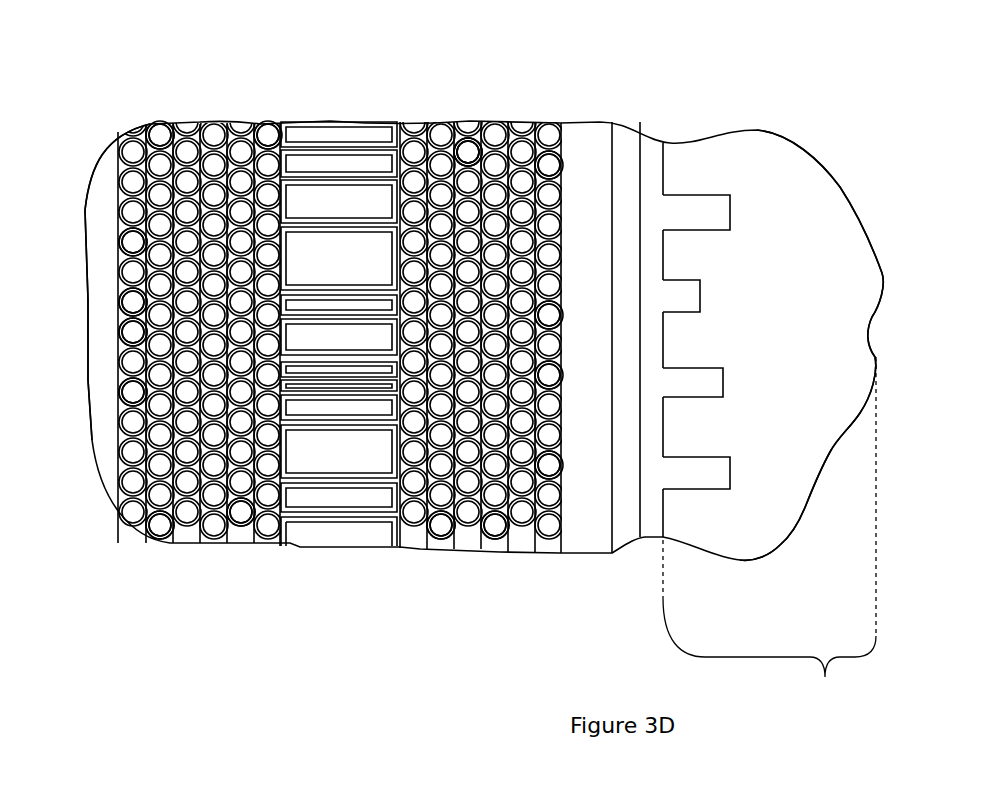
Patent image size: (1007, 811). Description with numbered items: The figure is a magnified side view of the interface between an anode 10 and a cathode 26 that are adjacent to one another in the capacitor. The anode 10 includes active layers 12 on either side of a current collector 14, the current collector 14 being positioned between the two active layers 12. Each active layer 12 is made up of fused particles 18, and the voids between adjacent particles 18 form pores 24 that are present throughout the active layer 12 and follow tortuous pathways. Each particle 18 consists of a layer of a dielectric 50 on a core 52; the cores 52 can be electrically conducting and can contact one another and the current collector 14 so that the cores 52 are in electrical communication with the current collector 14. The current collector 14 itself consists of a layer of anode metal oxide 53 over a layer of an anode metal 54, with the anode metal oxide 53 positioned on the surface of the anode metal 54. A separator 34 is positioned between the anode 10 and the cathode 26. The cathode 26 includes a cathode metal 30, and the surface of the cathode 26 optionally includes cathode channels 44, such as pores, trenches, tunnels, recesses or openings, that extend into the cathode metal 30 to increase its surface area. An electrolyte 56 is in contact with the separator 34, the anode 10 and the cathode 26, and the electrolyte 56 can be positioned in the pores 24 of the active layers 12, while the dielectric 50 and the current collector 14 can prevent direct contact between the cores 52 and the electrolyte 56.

The anode 10 is at (121, 560).
The active layer 12 is at (278, 97).
The current collector 14 is at (282, 97).
The particle 18 is at (150, 130).
The pore 24 is at (477, 124).
The cathode 26 is at (769, 535).
The cathode metal 30 is at (827, 238).
The separator 34 is at (604, 148).
The cathode channel 44 is at (730, 218).
The dielectric 50 is at (562, 168).
The core 52 is at (263, 128).
The anode metal oxide 53 is at (333, 140).
The anode metal 54 is at (338, 165).
The electrolyte 56 is at (661, 470).